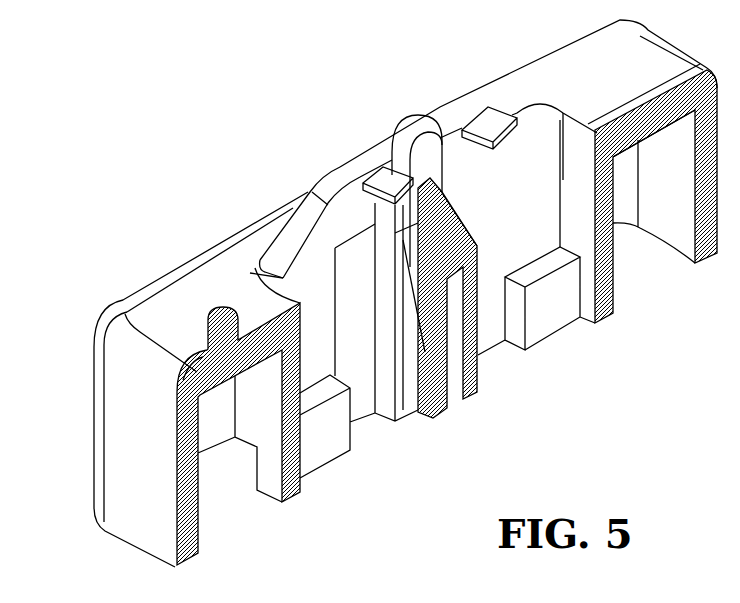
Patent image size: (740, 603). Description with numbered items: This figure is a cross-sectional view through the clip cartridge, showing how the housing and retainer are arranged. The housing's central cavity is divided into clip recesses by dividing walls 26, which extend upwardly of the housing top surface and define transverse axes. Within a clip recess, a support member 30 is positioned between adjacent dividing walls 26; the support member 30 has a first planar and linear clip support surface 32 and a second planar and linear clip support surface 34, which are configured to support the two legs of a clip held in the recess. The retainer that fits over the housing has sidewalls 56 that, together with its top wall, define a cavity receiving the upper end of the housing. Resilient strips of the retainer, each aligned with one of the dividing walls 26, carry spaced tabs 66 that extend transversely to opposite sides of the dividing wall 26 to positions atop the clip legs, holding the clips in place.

The dividing walls 26 is at (452, 107).
The support member 30 is at (423, 353).
The first planar and linear clip support surface 32 is at (420, 190).
The second planar and linear clip support surface 34 is at (453, 212).
The sidewalls 56 is at (130, 388).
The spaced tabs 66 is at (383, 180).